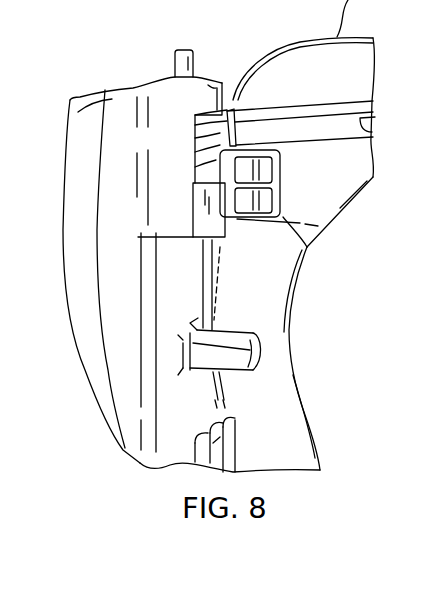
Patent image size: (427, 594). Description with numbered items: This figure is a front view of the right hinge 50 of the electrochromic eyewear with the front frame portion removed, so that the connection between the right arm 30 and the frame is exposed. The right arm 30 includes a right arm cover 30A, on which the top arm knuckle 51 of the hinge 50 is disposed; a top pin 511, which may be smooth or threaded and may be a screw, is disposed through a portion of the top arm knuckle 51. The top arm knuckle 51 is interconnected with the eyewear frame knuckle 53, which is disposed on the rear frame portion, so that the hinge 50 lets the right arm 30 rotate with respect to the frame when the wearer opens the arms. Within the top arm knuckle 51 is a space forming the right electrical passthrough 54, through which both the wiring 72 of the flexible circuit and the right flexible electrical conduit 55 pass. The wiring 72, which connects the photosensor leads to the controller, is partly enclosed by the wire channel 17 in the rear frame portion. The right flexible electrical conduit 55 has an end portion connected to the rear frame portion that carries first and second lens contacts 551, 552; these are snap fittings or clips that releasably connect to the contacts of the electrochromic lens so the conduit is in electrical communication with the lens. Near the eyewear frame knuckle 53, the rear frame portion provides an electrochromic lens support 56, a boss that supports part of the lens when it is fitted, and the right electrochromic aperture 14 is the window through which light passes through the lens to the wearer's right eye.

The right electrochromic aperture 14 is at (317, 437).
The wire channel 17 is at (377, 130).
The right arm 30 is at (102, 240).
The right arm cover 30A is at (105, 190).
The hinge 50 is at (130, 60).
The top arm knuckle 51 is at (221, 80).
The top pin 511 is at (172, 62).
The eyewear frame knuckle 53 is at (210, 411).
The right electrical passthrough 54 is at (193, 142).
The right flexible electrical conduit 55 is at (281, 186).
The first lens contact 551 is at (278, 205).
The second lens contact 552 is at (275, 168).
The electrochromic lens support 56 is at (262, 348).
The wiring 72 is at (377, 108).